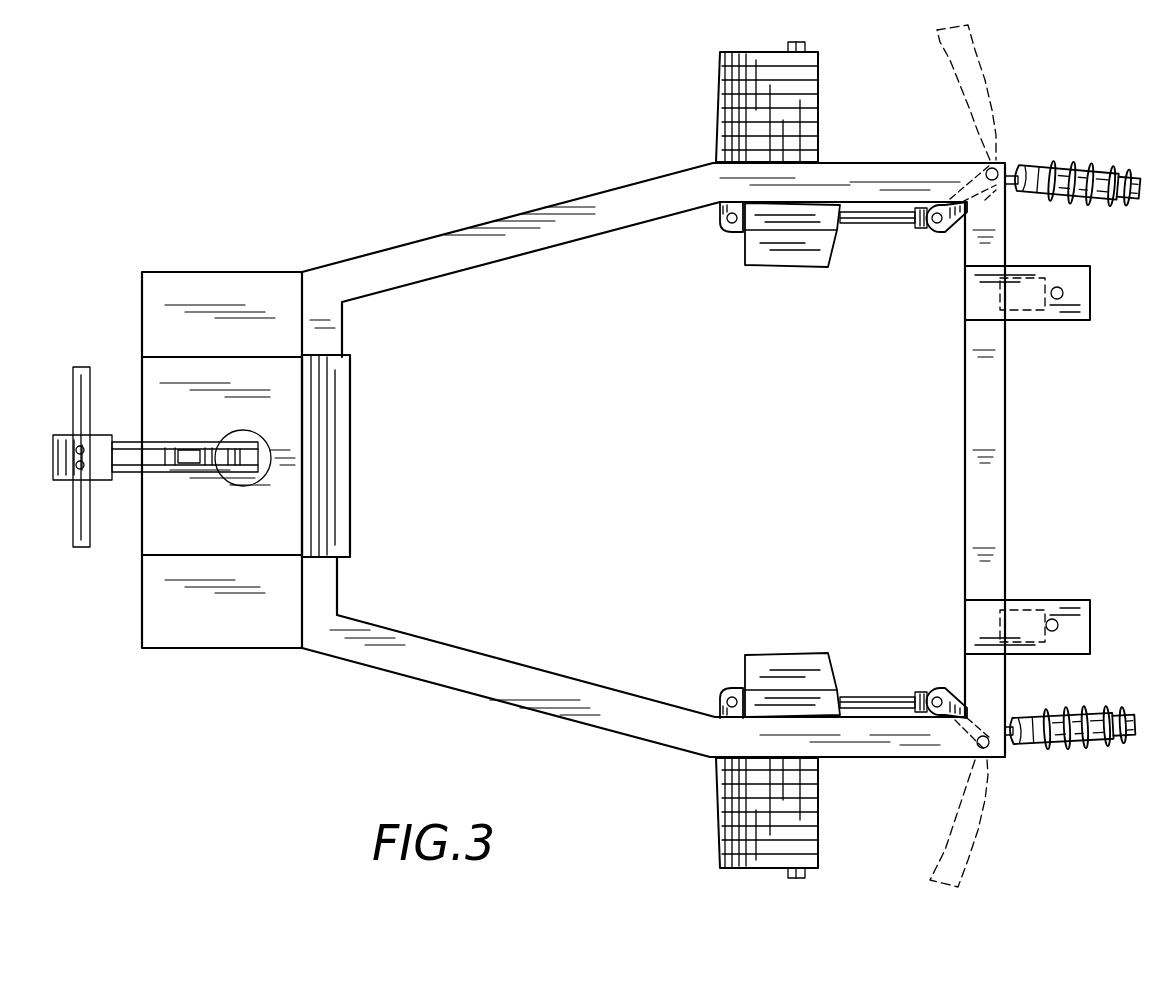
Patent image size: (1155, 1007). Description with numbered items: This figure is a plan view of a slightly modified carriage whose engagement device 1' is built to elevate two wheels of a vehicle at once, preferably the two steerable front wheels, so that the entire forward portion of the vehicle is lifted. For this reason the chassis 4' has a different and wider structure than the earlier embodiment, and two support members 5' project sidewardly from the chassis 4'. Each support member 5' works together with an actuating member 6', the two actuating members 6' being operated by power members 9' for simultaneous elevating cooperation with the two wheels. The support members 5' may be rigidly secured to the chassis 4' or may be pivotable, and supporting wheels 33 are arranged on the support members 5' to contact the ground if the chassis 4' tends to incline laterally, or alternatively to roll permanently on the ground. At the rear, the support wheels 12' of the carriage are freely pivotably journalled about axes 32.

The engagement device 1' is at (377, 449).
The chassis 4' is at (573, 462).
The support member 5' is at (793, 460).
The actuating member 6' is at (1073, 463).
The power member 9' is at (843, 460).
The rear support wheel 12' is at (1037, 446).
The axis 32 is at (1060, 625).
The supporting wheel 33 is at (808, 47).